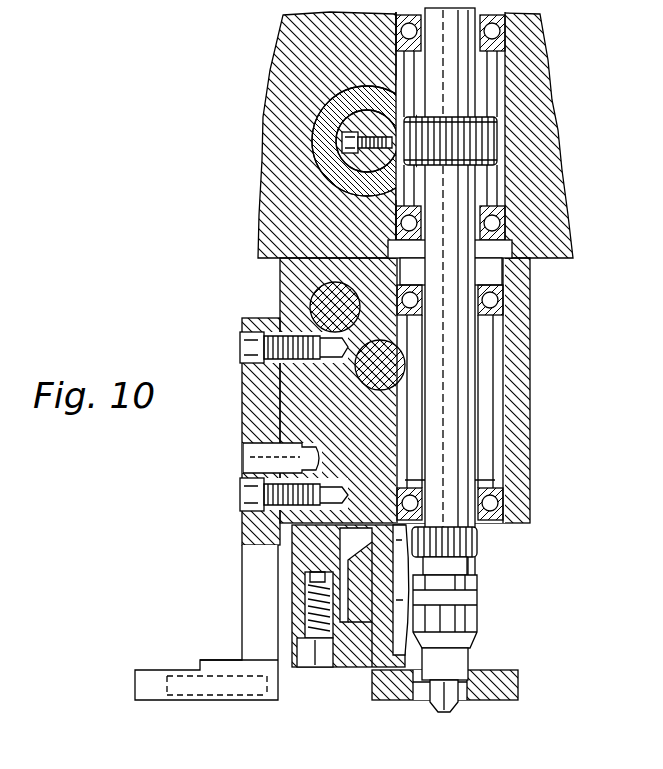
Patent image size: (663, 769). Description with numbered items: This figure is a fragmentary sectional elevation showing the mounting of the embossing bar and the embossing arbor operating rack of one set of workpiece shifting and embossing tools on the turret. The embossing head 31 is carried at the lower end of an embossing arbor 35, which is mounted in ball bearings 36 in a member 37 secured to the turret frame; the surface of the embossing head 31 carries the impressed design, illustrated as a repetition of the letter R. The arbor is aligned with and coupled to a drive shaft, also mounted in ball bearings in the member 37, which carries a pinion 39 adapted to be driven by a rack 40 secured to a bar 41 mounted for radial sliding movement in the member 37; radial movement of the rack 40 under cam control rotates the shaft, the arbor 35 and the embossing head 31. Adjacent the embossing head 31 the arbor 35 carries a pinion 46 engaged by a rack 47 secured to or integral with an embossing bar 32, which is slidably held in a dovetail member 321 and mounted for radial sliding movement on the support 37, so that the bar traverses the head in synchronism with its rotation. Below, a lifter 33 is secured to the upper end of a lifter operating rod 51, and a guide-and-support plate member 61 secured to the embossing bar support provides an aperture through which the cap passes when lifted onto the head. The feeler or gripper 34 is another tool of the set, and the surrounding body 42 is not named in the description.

The embossing head 31 is at (477, 620).
The embossing bar 32 is at (372, 656).
The dovetail member 321 is at (345, 668).
The lifter 33 is at (445, 664).
The feeler or gripper 34 is at (487, 412).
The embossing arbor 35 is at (480, 447).
The ball bearings 36 is at (510, 290).
The member 37 is at (520, 372).
The pinion 39 is at (482, 137).
The rack 40 is at (373, 88).
The bar 41 is at (345, 157).
The upper block 42 is at (552, 210).
The pinion 46 is at (480, 540).
The rack 47 is at (401, 590).
The lifter operating rod 51 is at (448, 707).
The guide-and-support plate member 61 is at (248, 537).